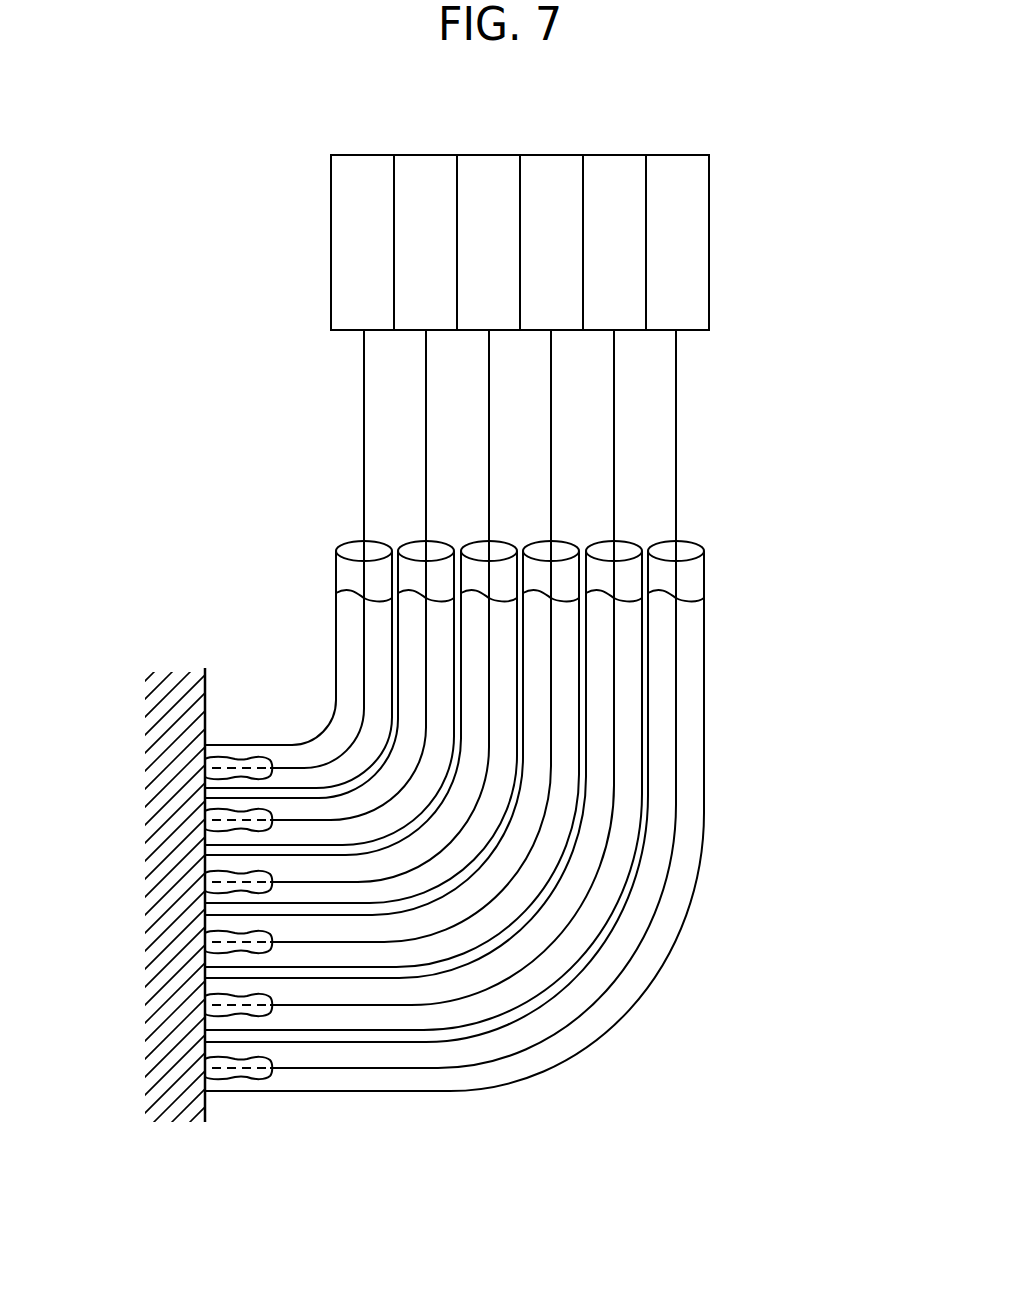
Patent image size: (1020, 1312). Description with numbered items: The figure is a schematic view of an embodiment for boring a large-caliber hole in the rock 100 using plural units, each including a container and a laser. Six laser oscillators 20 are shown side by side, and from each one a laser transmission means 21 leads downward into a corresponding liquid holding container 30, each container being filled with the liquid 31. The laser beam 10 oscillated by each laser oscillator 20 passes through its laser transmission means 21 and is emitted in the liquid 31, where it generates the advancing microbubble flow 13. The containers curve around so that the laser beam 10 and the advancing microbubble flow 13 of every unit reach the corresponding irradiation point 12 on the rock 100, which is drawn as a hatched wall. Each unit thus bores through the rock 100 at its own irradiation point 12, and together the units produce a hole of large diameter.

The laser oscillator 20 is at (770, 166).
The laser transmission means 21 is at (677, 407).
The liquid holding container 30 is at (525, 710).
The liquid 31 is at (683, 691).
The rock 100 is at (176, 690).
The irradiation point 12 is at (206, 769).
The advancing microbubble flow 13 is at (222, 757).
The laser beam 10 is at (225, 1076).